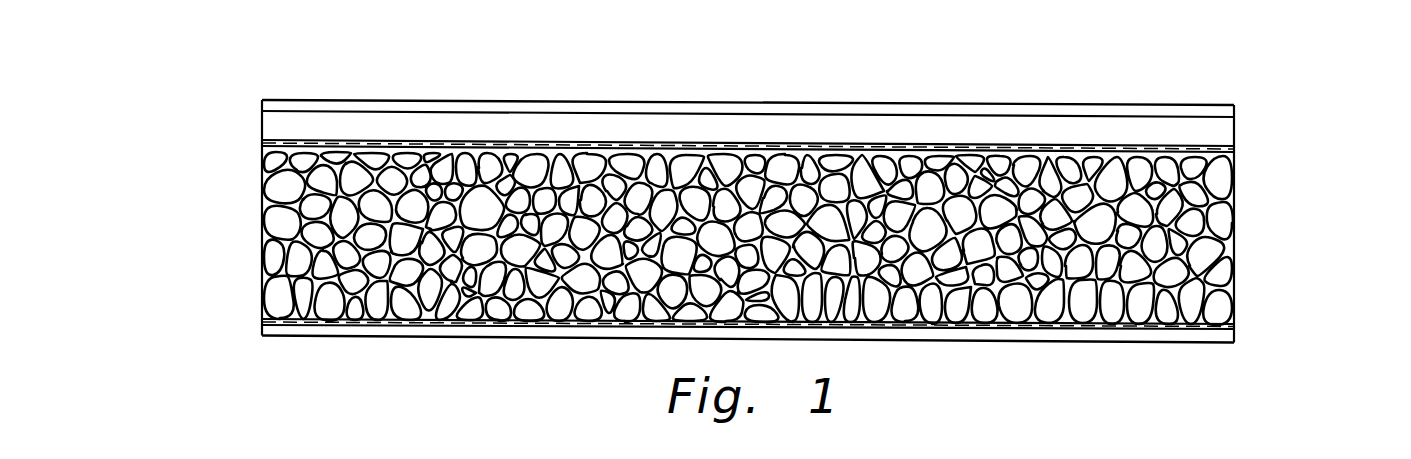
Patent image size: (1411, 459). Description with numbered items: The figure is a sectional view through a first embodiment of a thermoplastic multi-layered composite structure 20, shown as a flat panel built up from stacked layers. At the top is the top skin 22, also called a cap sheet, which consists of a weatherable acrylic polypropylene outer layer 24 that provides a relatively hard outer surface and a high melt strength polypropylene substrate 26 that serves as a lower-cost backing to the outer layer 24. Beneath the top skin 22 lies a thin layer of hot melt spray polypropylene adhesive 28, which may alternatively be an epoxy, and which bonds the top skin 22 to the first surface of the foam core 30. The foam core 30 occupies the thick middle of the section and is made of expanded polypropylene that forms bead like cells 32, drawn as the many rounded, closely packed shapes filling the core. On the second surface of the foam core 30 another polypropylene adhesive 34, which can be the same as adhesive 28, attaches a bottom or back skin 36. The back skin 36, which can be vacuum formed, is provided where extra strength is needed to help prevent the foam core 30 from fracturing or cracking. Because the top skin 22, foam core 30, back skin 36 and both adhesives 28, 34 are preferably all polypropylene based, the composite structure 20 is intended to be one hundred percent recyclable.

The composite structure 20 is at (162, 181).
The top skin 22 is at (246, 91).
The acrylic polypropylene outer layer 24 is at (312, 107).
The polypropylene substrate 26 is at (272, 130).
The hot melt spray polypropylene adhesive 28 is at (1235, 148).
The foam core 30 is at (262, 243).
The bead like cells 32 is at (523, 198).
The polypropylene adhesive 34 is at (1233, 327).
The back skin 36 is at (262, 328).